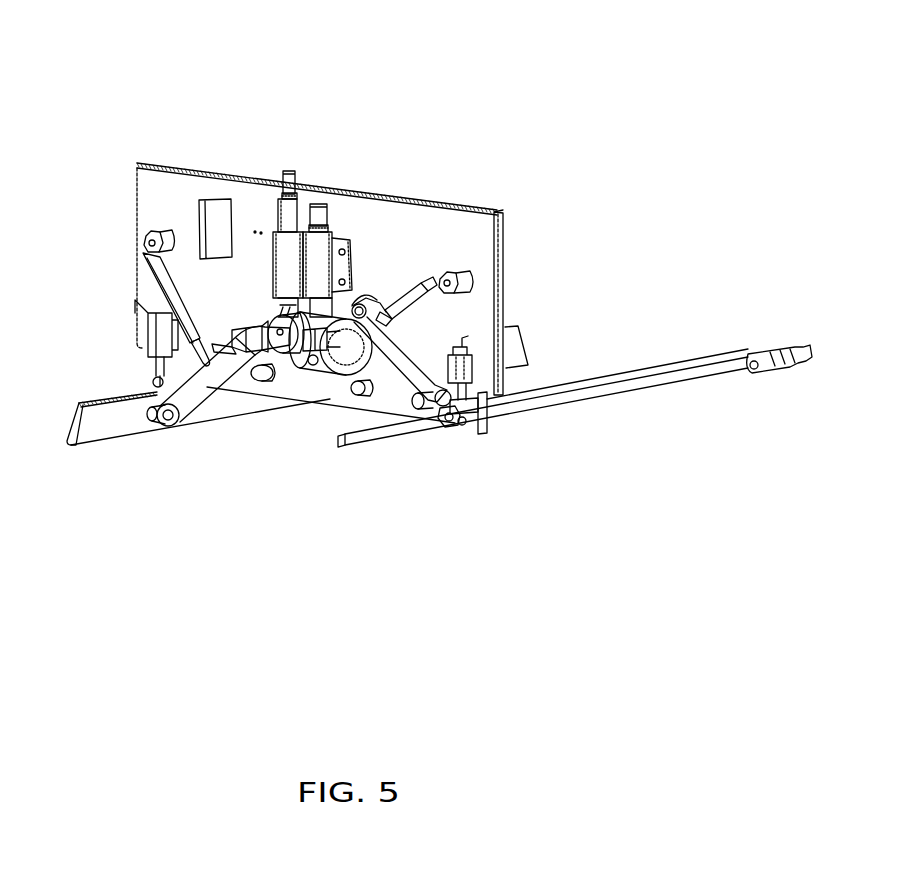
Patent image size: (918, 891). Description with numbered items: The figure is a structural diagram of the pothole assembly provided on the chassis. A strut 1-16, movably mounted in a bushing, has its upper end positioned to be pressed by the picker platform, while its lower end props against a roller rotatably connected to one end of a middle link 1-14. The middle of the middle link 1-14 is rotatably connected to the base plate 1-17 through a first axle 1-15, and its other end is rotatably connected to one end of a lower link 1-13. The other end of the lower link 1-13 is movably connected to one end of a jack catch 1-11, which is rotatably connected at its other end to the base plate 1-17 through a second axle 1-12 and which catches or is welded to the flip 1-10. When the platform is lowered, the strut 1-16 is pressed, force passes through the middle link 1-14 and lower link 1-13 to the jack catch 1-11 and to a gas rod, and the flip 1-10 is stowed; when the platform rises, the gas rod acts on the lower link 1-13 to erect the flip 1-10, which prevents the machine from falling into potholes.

The flip 1-10 is at (538, 412).
The jack catch 1-11 is at (442, 418).
The second axle 1-12 is at (457, 418).
The lower link 1-13 is at (397, 352).
The middle link 1-14 is at (345, 380).
The first axle 1-15 is at (272, 331).
The strut 1-16 is at (143, 252).
The base plate 1-17 is at (415, 230).